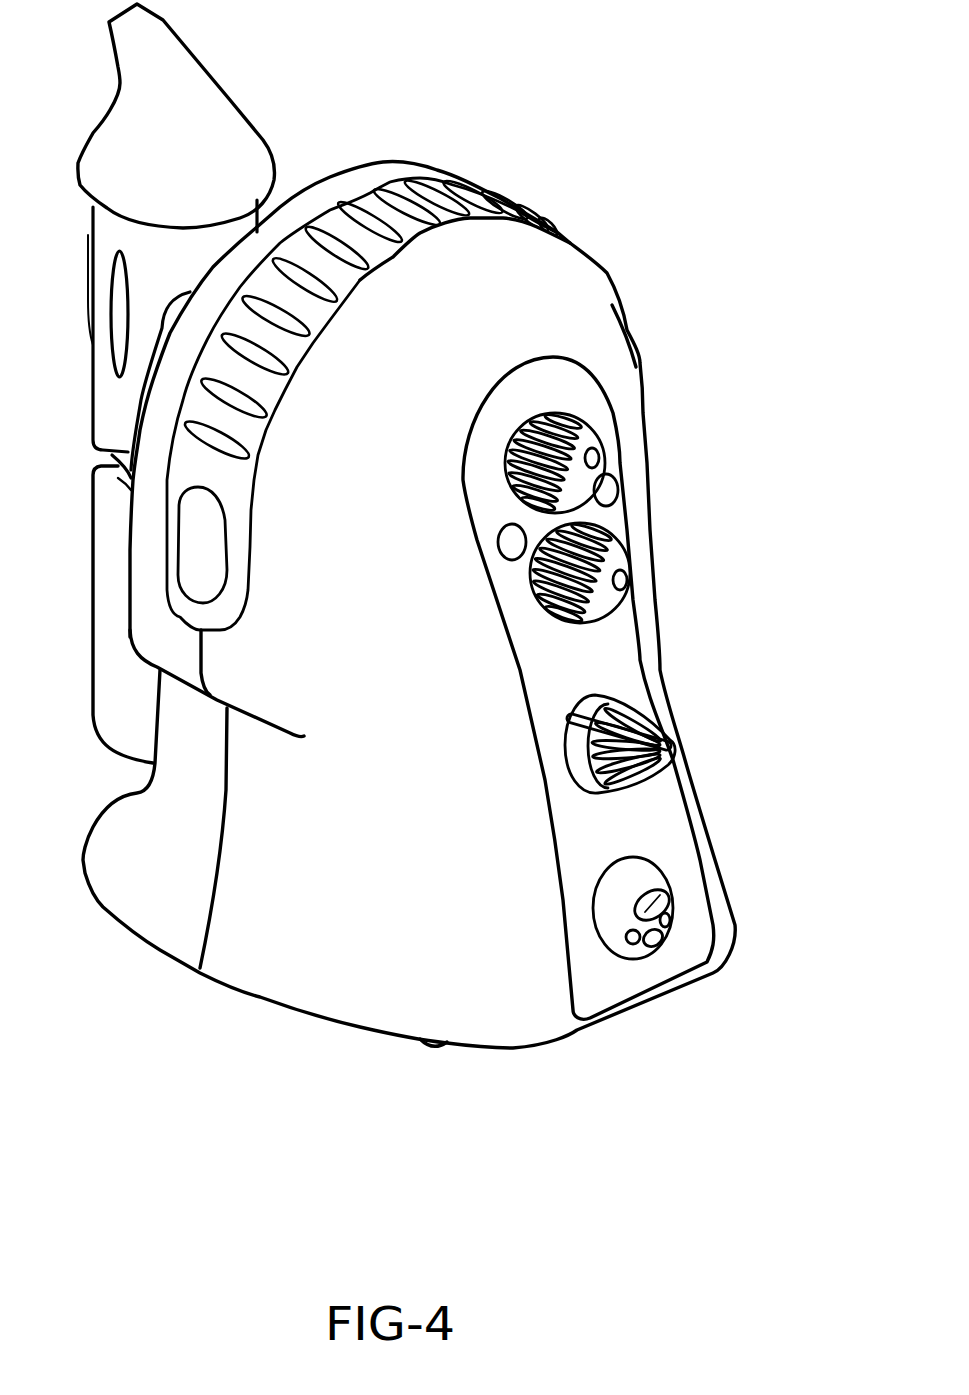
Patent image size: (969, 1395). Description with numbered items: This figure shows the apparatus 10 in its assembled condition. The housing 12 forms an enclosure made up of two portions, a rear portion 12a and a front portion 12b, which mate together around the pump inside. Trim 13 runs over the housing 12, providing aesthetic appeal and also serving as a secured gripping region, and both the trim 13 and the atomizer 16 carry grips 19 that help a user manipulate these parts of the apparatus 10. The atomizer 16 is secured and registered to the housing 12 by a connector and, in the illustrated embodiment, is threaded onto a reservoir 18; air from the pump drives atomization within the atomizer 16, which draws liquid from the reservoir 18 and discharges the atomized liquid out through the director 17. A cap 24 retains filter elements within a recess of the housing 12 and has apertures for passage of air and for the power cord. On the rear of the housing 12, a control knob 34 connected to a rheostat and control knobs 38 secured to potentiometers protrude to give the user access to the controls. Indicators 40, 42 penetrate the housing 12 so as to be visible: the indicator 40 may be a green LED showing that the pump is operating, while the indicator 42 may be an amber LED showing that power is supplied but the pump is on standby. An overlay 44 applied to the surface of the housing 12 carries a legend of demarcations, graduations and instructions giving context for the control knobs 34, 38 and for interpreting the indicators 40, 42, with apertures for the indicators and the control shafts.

The apparatus 10 is at (457, 584).
The housing 12 is at (409, 663).
The rear portion 12a is at (388, 967).
The front portion 12b is at (152, 884).
The trim 13 is at (402, 352).
The atomizer 16 is at (183, 283).
The director 17 is at (186, 172).
The reservoir 18 is at (146, 722).
The grips 19 is at (355, 213).
The cap 24 is at (650, 882).
The control knob 34 is at (677, 731).
The control knobs 38 is at (593, 455).
The indicator 40 is at (505, 545).
The indicator 42 is at (608, 492).
The overlay 44 is at (617, 710).